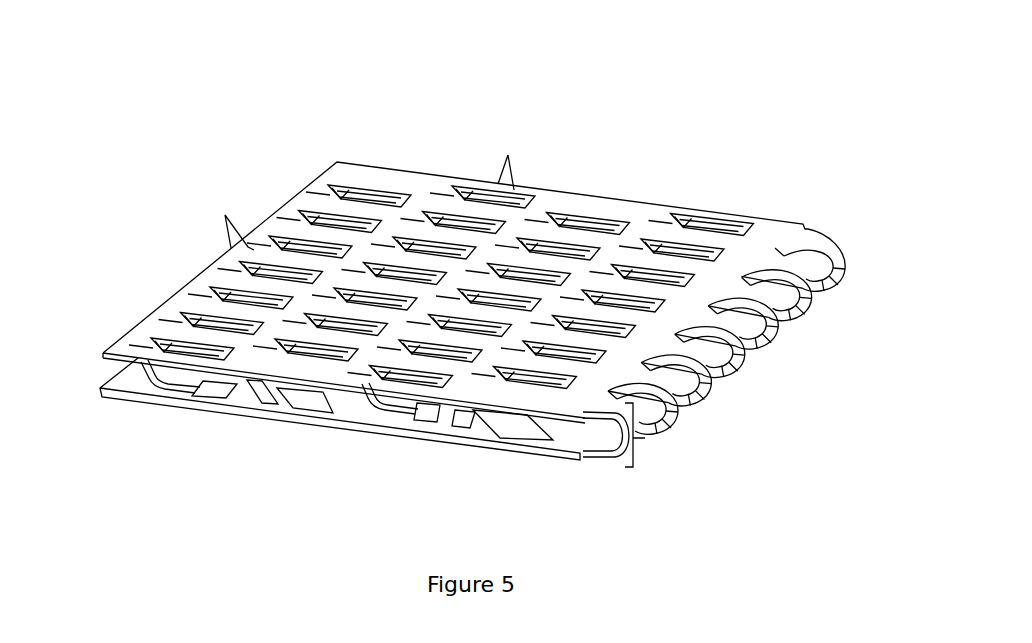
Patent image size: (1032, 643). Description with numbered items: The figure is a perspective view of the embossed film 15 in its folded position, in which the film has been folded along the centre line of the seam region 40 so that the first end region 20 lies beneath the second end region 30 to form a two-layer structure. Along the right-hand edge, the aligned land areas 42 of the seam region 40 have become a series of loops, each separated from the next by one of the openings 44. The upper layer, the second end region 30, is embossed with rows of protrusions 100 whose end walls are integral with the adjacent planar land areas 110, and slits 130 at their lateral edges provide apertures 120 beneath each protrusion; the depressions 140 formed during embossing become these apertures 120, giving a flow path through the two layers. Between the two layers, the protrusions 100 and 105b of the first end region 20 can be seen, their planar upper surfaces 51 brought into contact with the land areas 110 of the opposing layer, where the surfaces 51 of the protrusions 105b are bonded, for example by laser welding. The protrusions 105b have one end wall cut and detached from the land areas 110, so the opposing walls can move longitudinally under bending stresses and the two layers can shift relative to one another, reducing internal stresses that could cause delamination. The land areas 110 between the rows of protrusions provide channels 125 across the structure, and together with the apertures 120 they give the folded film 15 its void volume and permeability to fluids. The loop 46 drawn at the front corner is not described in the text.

The film 15 is at (710, 160).
The first end region 20 is at (103, 384).
The second end region 30 is at (213, 252).
The seam region 40 is at (645, 438).
The land areas 42 is at (672, 400).
The openings 44 is at (717, 362).
The end loop 46 is at (598, 435).
The upper surface 51 is at (207, 383).
The protrusions 100 is at (245, 403).
The protrusions 105b is at (148, 382).
The land areas 110 is at (394, 222).
The apertures 120 is at (305, 395).
The channels 125 is at (462, 417).
The slits 130 is at (688, 222).
The depressions 140 is at (458, 224).